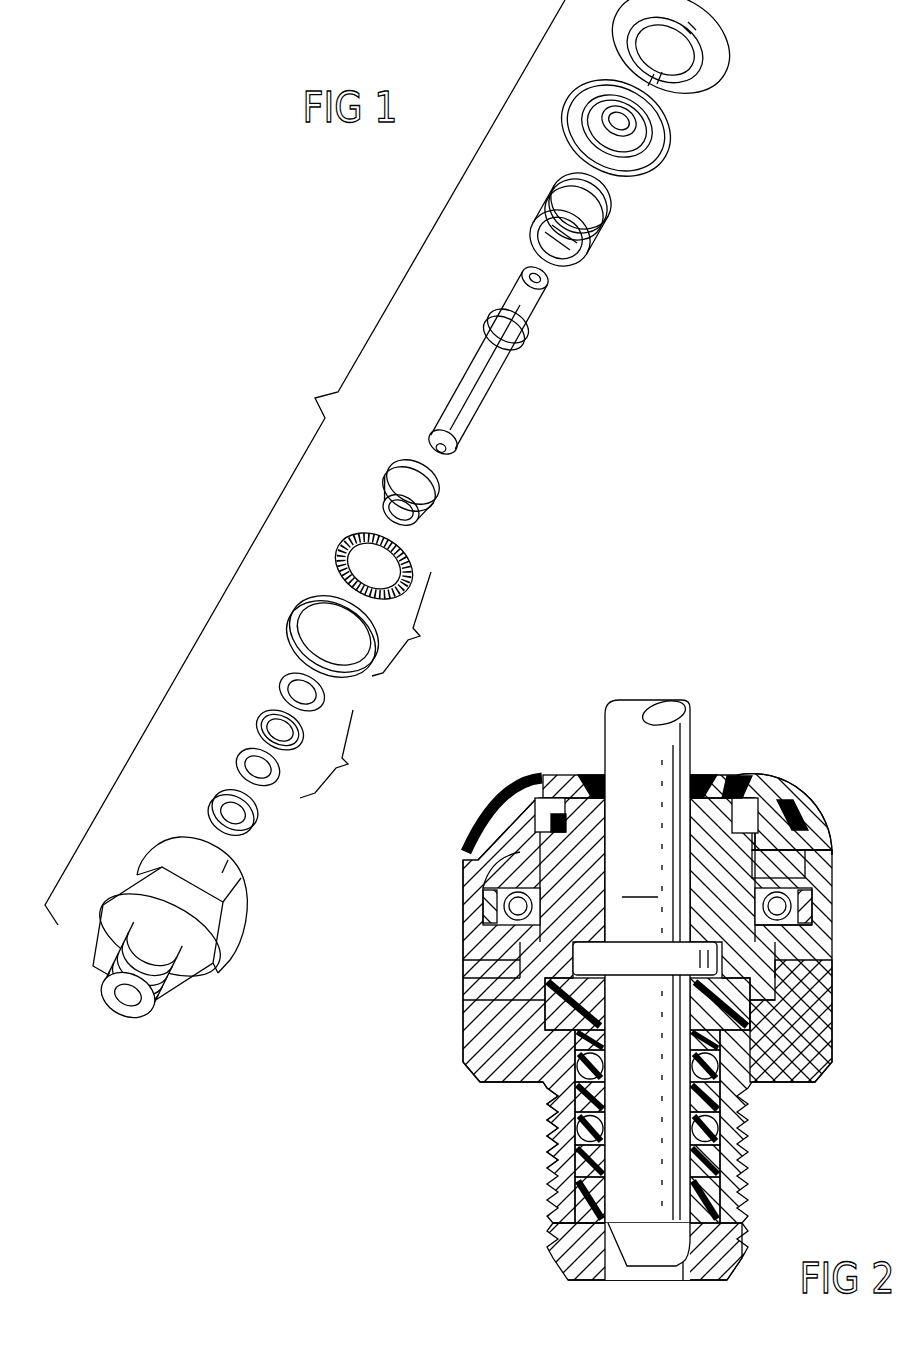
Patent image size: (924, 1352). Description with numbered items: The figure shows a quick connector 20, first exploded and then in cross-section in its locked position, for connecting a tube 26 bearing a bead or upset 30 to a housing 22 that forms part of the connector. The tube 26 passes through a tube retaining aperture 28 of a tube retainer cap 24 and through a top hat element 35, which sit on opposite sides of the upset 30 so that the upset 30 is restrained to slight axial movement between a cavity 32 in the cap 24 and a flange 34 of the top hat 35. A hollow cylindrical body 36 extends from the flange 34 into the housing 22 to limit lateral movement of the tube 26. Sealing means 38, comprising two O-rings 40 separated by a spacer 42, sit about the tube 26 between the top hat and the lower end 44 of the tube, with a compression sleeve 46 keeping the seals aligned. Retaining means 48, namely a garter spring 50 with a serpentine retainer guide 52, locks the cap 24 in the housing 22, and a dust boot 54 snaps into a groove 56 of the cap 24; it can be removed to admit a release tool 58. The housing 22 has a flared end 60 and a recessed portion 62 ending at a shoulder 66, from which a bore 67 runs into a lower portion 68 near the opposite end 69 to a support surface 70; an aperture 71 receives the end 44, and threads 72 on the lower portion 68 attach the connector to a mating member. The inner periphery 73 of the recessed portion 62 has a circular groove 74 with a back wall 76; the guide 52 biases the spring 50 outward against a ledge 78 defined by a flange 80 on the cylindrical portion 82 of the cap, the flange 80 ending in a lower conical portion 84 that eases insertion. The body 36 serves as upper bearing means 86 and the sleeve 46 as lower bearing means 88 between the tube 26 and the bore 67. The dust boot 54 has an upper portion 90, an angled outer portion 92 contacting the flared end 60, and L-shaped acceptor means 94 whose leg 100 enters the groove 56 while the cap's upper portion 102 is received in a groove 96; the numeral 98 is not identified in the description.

In FIG. 1, the quick connector 20 is at (305, 462).
In FIG. 2, the quick connector 20 is at (796, 744).
In FIG. 1, the housing 22 is at (244, 935).
In FIG. 2, the housing 22 is at (629, 1010).
In FIG. 1, the tube retainer cap 24 is at (579, 222).
In FIG. 2, the tube retainer cap 24 is at (650, 859).
In FIG. 1, the tube 26 is at (480, 360).
In FIG. 2, the tube 26 is at (645, 1013).
In FIG. 1, the tube retaining aperture 28 is at (572, 258).
In FIG. 1, the upset 30 is at (522, 345).
In FIG. 2, the upset 30 is at (622, 973).
In FIG. 1, the cavity 32 is at (532, 250).
In FIG. 2, the cavity 32 is at (780, 1043).
In FIG. 1, the flange 34 is at (438, 485).
In FIG. 1, the top hat element 35 is at (456, 497).
In FIG. 1, the hollow cylindrical body 36 is at (428, 514).
In FIG. 1, the sealing means 38 is at (263, 750).
In FIG. 1, the O-rings 40 is at (283, 680).
In FIG. 2, the O-rings 40 is at (575, 1120).
In FIG. 1, the spacer 42 is at (258, 722).
In FIG. 2, the spacer 42 is at (720, 1110).
In FIG. 1, the lower end 44 is at (425, 455).
In FIG. 2, the lower end 44 is at (640, 1268).
In FIG. 1, the compression sleeve 46 is at (215, 800).
In FIG. 2, the compression sleeve 46 is at (720, 1210).
In FIG. 1, the retaining means 48 is at (356, 597).
In FIG. 1, the garter spring 50 is at (352, 537).
In FIG. 2, the garter spring 50 is at (795, 930).
In FIG. 1, the retainer guide 52 is at (320, 598).
In FIG. 2, the retainer guide 52 is at (812, 906).
In FIG. 1, the dust boot 54 is at (678, 130).
In FIG. 2, the dust boot 54 is at (510, 786).
In FIG. 1, the groove 56 is at (602, 208).
In FIG. 2, the groove 56 is at (698, 797).
In FIG. 1, the release tool 58 is at (733, 62).
In FIG. 2, the flared end 60 is at (470, 860).
In FIG. 2, the recessed portion 62 is at (485, 978).
In FIG. 2, the shoulder 66 is at (792, 1012).
In FIG. 2, the bore 67 is at (738, 1045).
In FIG. 2, the lower portion 68 is at (654, 1265).
In FIG. 2, the opposite end 69 is at (580, 1282).
In FIG. 2, the support surface 70 is at (745, 1240).
In FIG. 2, the aperture 71 is at (712, 1268).
In FIG. 2, the threads 72 is at (548, 1160).
In FIG. 2, the inner periphery 73 is at (470, 1035).
In FIG. 2, the circular groove 74 is at (500, 882).
In FIG. 2, the back wall 76 is at (484, 906).
In FIG. 2, the ledge 78 is at (490, 925).
In FIG. 2, the flange 80 is at (470, 948).
In FIG. 2, the cylindrical portion 82 is at (792, 875).
In FIG. 2, the lower conical portion 84 is at (475, 1003).
In FIG. 2, the upper bearing means 86 is at (545, 1088).
In FIG. 2, the lower bearing means 88 is at (578, 1226).
In FIG. 2, the upper portion 90 is at (587, 773).
In FIG. 2, the outer portion 92 is at (808, 828).
In FIG. 2, the acceptor means 94 is at (790, 791).
In FIG. 2, the groove 96 is at (545, 796).
In FIG. 2, the seal 98 is at (768, 800).
In FIG. 2, the leg 100 is at (820, 848).
In FIG. 2, the upper portion 102 is at (755, 798).